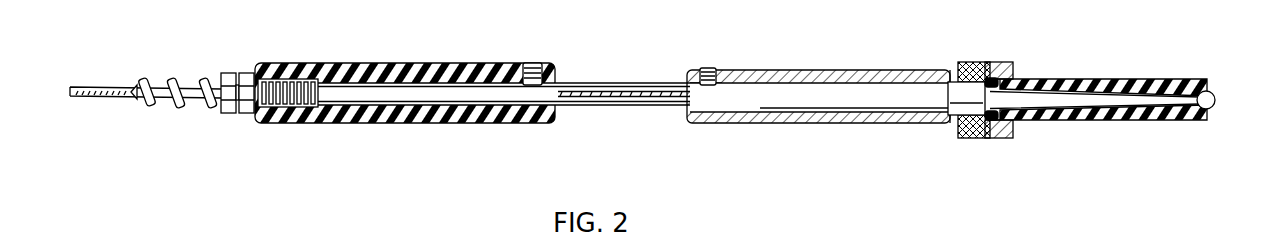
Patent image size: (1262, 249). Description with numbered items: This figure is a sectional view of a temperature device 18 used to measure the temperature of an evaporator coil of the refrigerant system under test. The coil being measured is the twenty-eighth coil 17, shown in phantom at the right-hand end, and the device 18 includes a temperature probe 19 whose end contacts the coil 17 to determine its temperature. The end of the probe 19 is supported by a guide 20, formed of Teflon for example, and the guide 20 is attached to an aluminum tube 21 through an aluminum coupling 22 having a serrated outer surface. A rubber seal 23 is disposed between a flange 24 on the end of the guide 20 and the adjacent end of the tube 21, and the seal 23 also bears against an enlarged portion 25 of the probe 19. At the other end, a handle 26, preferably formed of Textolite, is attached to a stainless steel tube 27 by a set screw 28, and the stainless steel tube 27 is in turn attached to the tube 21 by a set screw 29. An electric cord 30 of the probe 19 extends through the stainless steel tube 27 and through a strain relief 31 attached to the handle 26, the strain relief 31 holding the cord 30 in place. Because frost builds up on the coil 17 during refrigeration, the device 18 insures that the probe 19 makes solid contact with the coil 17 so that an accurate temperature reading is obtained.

The twenty-eighth coil 17 is at (1214, 93).
The temperature device 18 is at (812, 42).
The temperature probe 19 is at (1125, 110).
The guide 20 is at (1125, 79).
The tube 21 is at (826, 123).
The coupling 22 is at (972, 62).
The rubber seal 23 is at (996, 138).
The flange 24 is at (1000, 70).
The enlarged portion 25 is at (963, 110).
The handle 26 is at (460, 62).
The stainless steel tube 27 is at (580, 83).
The set screw 28 is at (533, 63).
The set screw 29 is at (706, 68).
The electric cord 30 is at (97, 97).
The strain relief 31 is at (231, 72).